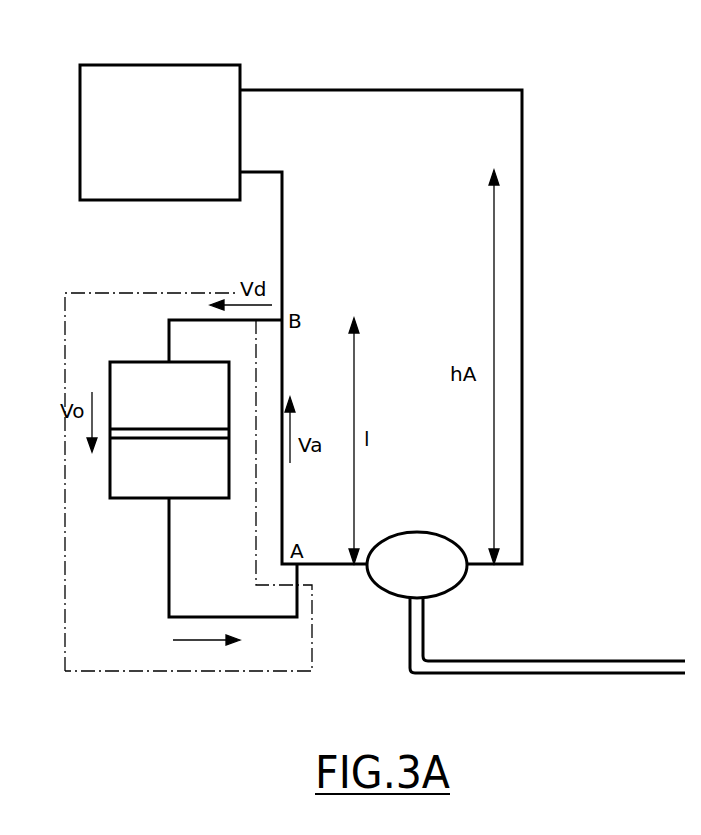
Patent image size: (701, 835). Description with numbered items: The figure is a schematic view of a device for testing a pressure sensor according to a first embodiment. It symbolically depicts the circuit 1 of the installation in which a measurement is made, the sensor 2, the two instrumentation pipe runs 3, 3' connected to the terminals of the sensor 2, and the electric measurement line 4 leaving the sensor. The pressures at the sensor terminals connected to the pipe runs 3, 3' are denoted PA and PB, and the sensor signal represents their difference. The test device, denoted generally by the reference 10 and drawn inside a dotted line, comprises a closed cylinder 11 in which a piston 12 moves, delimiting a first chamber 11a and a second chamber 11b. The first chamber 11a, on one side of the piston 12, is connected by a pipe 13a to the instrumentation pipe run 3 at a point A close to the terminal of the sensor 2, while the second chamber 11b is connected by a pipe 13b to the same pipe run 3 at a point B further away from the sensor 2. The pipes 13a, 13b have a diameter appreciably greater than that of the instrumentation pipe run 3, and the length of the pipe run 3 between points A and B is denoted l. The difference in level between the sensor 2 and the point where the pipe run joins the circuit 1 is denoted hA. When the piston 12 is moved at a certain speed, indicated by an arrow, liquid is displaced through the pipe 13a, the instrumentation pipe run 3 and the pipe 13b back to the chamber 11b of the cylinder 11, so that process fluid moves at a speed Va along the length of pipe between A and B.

The circuit of the installation 1 is at (176, 78).
The sensor 2 is at (412, 532).
The instrumentation pipe run 3 is at (303, 368).
The instrumentation pipe run 3' is at (381, 296).
The electric measurement line 4 is at (640, 660).
The test device 10 is at (202, 685).
The closed cylinder 11 is at (213, 499).
The first chamber 11a is at (172, 465).
The second chamber 11b is at (172, 401).
The piston 12 is at (220, 428).
The pipe 13a is at (266, 618).
The pipe 13b is at (180, 320).